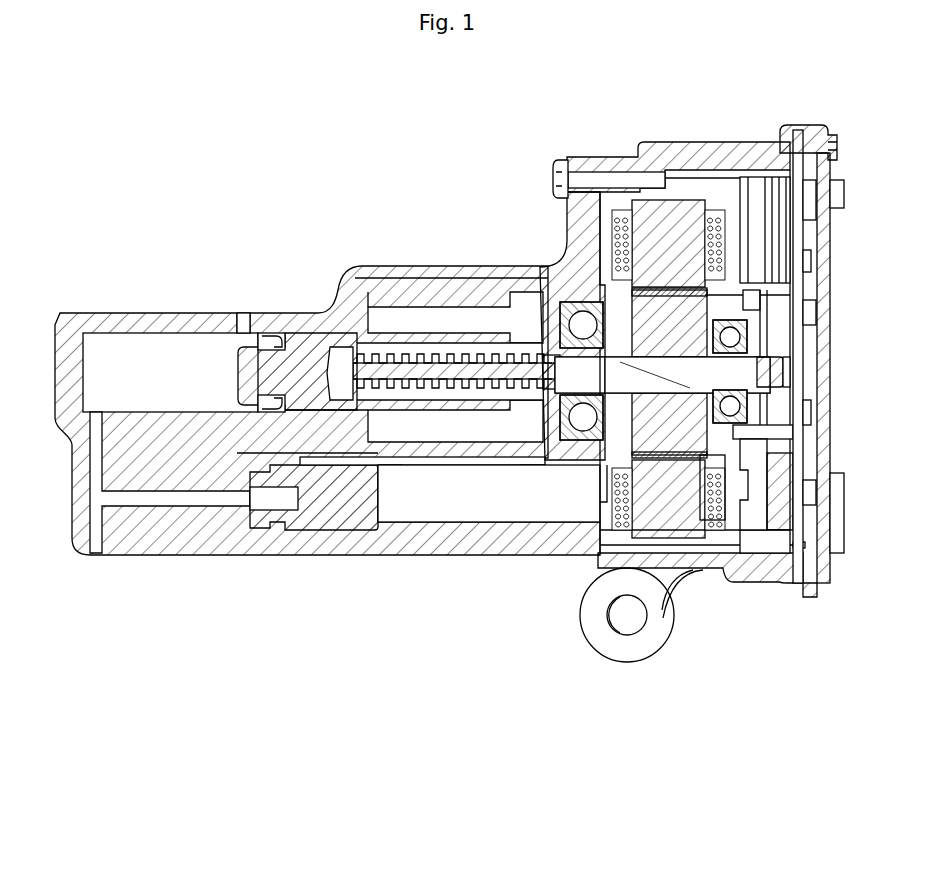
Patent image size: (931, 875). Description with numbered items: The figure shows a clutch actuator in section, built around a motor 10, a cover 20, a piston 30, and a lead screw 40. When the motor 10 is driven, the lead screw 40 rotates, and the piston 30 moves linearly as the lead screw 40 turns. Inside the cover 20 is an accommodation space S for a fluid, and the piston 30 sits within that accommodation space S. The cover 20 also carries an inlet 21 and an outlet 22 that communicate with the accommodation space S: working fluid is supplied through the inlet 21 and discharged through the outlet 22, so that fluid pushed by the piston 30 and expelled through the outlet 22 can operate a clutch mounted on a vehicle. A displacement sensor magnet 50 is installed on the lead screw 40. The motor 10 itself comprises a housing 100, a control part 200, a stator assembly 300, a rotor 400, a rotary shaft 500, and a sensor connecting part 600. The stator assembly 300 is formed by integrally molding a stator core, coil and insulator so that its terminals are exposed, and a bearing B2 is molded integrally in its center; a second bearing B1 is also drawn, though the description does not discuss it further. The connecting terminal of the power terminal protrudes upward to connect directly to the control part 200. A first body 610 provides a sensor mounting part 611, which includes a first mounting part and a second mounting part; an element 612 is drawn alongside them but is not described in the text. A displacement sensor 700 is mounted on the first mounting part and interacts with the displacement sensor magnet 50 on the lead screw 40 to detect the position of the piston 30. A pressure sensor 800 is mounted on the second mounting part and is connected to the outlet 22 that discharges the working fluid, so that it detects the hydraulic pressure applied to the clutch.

The motor 10 is at (522, 90).
The cover 20 is at (392, 278).
The inlet 21 is at (243, 317).
The outlet 22 is at (93, 498).
The piston 30 is at (310, 357).
The lead screw 40 is at (467, 372).
The displacement sensor magnet 50 is at (537, 513).
The accommodation space S is at (145, 368).
The housing 100 is at (618, 180).
The control part 200 is at (812, 165).
The stator assembly 300 is at (672, 242).
The rotor 400 is at (700, 215).
The rotary shaft 500 is at (745, 368).
The sensor connecting part 600 is at (657, 423).
The first body 610 is at (657, 599).
The sensor mounting part 611 is at (497, 445).
The bracket lug 612 is at (663, 553).
The displacement sensor 700 is at (465, 462).
The pressure sensor 800 is at (330, 500).
The bearing B1 is at (760, 453).
The bearing B2 is at (760, 392).